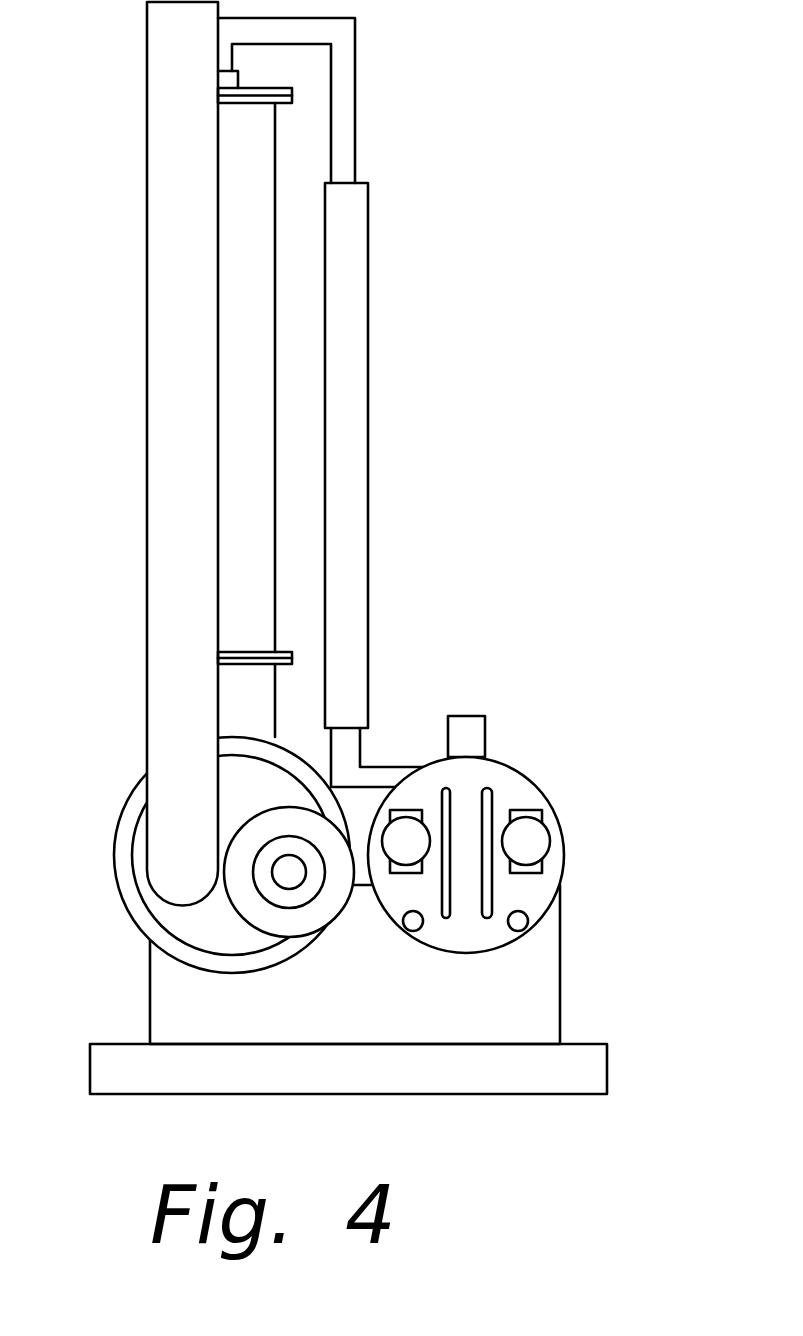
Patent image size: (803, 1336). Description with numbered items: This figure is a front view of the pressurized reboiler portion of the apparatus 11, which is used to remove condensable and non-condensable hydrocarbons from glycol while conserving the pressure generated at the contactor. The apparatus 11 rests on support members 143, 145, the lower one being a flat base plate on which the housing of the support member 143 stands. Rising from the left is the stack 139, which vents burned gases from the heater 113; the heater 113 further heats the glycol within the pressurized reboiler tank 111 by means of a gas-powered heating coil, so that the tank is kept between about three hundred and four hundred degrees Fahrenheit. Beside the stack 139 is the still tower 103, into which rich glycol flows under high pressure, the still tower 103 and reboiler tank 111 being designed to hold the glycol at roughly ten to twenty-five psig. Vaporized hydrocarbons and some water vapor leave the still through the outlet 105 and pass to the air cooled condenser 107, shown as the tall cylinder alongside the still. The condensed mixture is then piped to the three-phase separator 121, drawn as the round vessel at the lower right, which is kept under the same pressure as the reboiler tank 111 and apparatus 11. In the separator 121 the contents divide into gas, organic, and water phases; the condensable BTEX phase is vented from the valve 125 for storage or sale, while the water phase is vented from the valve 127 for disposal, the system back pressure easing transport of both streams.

The apparatus 11 is at (477, 96).
The still tower 103 is at (258, 233).
The outlet 105 is at (355, 53).
The air cooled condenser 107 is at (369, 342).
The pressurized reboiler tank 111 is at (128, 827).
The heater 113 is at (288, 923).
The three-phase separator 121 is at (550, 868).
The valve 125 is at (402, 833).
The valve 127 is at (540, 833).
The stack 139 is at (157, 345).
The support member 143 is at (547, 967).
The support member 145 is at (607, 1066).